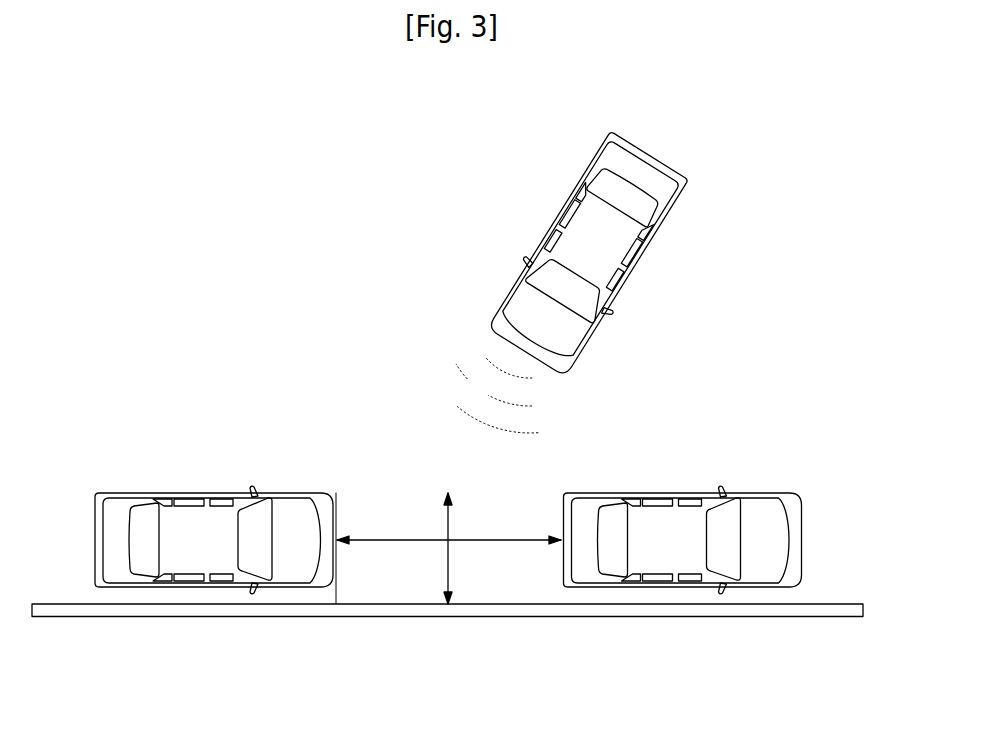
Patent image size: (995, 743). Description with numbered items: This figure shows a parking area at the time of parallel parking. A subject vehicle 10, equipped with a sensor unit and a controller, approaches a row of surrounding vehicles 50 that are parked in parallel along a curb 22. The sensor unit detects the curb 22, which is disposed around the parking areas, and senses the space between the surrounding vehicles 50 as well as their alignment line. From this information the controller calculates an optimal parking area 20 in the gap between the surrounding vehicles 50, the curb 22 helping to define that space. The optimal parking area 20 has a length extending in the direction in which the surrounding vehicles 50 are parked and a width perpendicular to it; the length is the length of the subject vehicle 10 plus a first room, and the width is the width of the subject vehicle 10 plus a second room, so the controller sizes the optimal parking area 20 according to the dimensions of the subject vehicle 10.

The subject vehicle 10 is at (603, 237).
The surrounding vehicles 50 is at (665, 522).
The optimal parking area 20 is at (377, 592).
The curb 22 is at (257, 612).